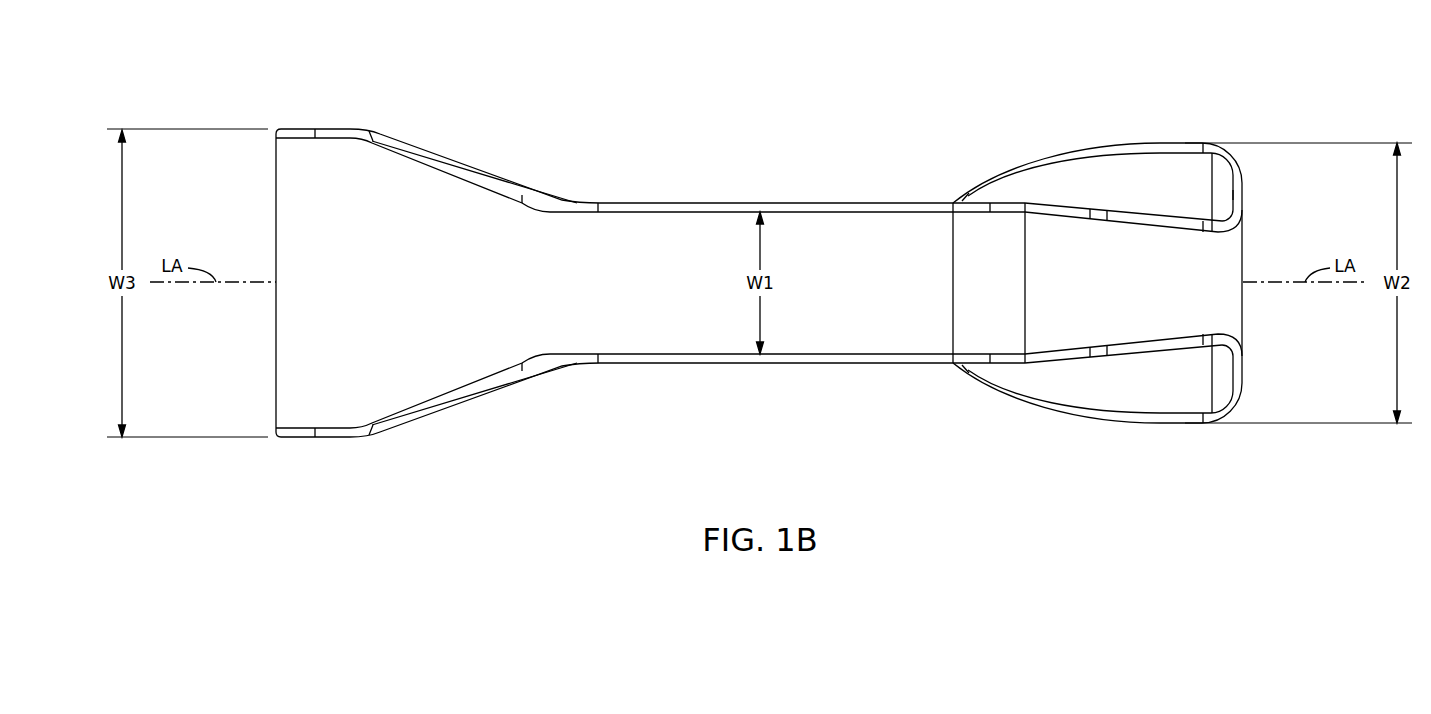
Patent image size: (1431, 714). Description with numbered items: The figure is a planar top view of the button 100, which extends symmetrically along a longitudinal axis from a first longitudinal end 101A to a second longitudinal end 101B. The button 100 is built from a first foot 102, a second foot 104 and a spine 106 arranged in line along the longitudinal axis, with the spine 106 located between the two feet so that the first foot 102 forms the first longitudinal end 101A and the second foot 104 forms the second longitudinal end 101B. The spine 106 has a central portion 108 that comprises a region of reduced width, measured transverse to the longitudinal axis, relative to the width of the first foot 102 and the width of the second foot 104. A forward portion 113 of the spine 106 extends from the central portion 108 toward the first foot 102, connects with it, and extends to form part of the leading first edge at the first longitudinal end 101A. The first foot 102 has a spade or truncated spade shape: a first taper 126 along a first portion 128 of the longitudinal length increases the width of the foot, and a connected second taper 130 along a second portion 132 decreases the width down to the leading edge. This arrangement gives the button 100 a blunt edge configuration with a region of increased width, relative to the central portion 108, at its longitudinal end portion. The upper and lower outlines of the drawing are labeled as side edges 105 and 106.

The button 100 is at (296, 73).
The first longitudinal end 101A is at (1243, 256).
The second longitudinal end 101B is at (276, 210).
The first foot 102 is at (1147, 430).
The second foot 104 is at (286, 446).
The first side edge 105 is at (695, 223).
The spine 106 is at (829, 371).
The central portion 108 is at (897, 202).
The forward portion 113 is at (1130, 297).
The first taper 126 is at (1006, 162).
The first portion 128 is at (1008, 404).
The second taper 130 is at (1147, 132).
The second portion 132 is at (1208, 430).